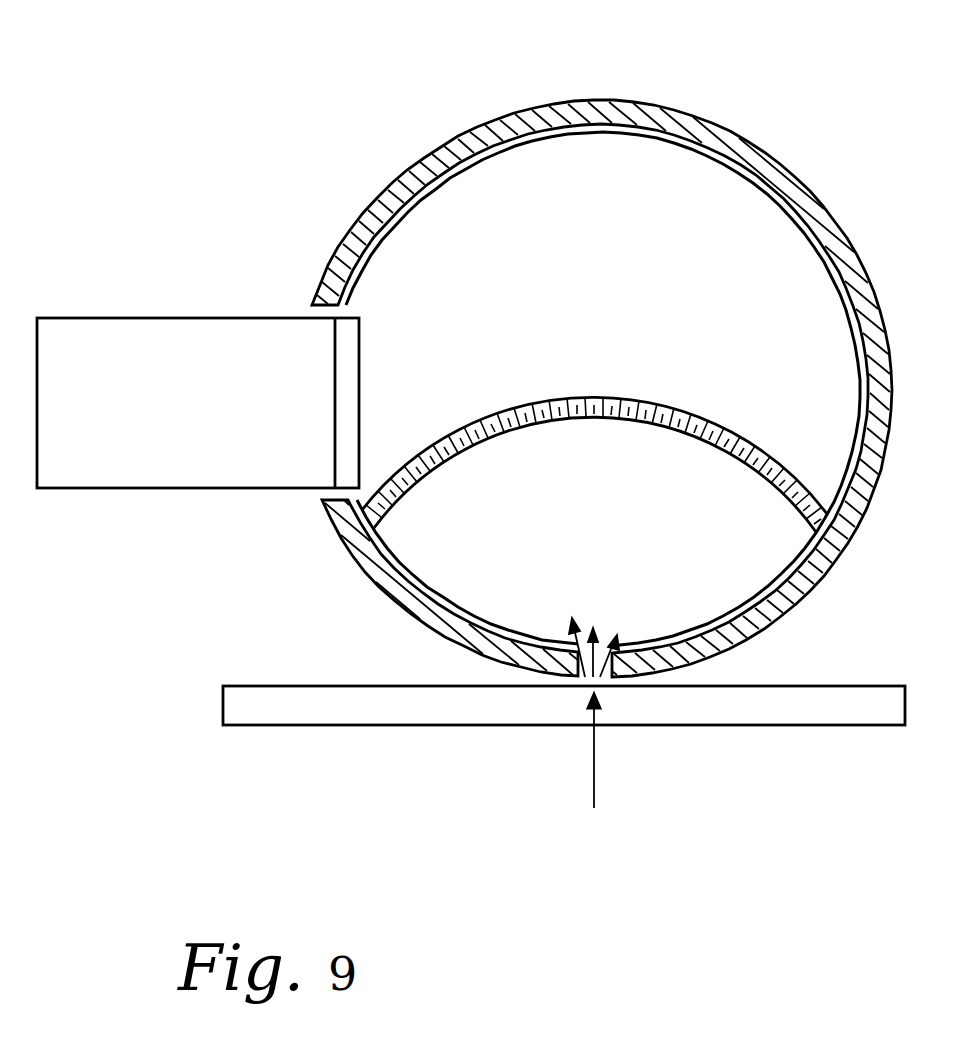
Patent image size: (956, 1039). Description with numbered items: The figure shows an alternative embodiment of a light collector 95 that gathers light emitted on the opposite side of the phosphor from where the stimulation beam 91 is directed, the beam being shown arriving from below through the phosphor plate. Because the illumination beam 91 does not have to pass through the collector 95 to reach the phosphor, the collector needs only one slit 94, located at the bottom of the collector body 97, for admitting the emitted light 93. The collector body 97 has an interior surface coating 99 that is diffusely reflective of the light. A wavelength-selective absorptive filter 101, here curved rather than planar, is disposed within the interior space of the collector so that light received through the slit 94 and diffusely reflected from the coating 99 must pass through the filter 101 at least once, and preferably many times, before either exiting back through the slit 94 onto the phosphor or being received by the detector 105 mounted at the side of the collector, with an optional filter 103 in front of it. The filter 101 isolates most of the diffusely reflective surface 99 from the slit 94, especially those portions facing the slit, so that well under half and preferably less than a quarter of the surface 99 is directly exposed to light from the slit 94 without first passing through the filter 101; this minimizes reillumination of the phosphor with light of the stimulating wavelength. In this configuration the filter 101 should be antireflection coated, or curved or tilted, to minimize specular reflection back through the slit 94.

The stimulation beam 91 is at (596, 748).
The emitted light 93 is at (572, 638).
The slit 94 is at (608, 630).
The collector 95 is at (602, 346).
The collector body 97 is at (797, 190).
The interior surface coating 99 is at (777, 212).
The wavelength-selective absorptive filter 101 is at (612, 397).
The optional filter 103 is at (342, 397).
The detector 105 is at (147, 318).